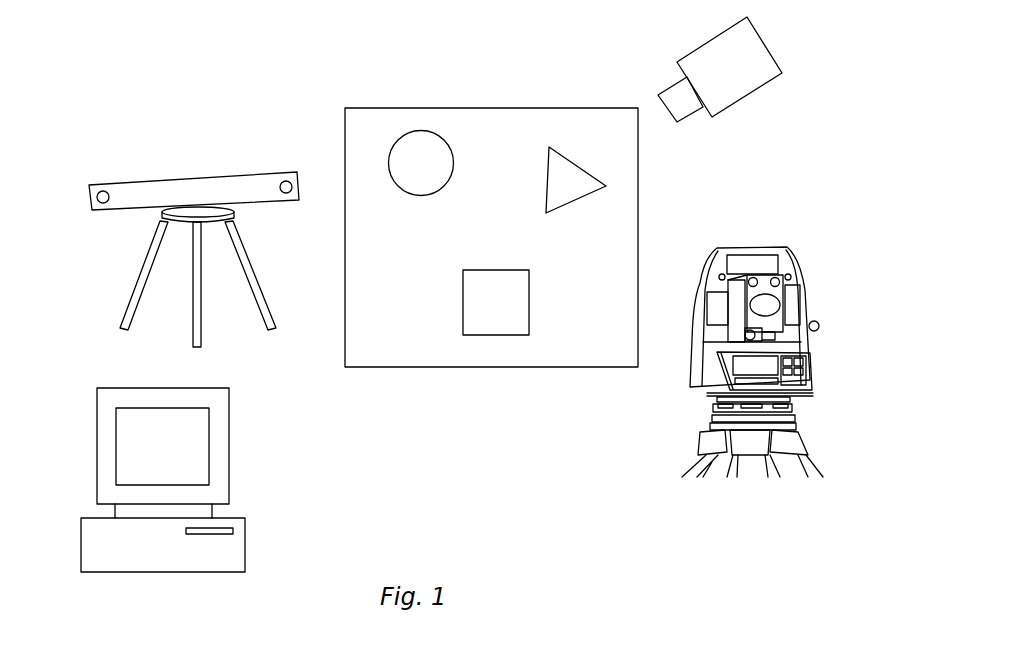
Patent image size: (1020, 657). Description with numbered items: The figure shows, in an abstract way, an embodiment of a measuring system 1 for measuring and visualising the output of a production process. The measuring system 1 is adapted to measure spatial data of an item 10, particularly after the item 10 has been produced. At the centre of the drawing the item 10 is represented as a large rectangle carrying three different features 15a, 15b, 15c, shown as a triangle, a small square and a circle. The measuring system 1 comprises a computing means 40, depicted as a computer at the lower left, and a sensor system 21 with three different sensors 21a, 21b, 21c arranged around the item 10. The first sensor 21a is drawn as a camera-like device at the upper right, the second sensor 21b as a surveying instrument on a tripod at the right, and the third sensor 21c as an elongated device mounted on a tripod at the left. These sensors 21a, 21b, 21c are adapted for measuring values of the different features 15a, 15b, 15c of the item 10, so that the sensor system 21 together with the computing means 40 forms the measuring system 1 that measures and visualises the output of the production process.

The measuring system 1 is at (507, 533).
The item 10 is at (368, 352).
The feature 15a is at (575, 181).
The feature 15b is at (503, 320).
The feature 15c is at (405, 148).
The sensor system 21 is at (597, 58).
The sensor 21a is at (730, 120).
The sensor 21b is at (678, 423).
The sensor 21c is at (175, 160).
The computing means 40 is at (260, 477).